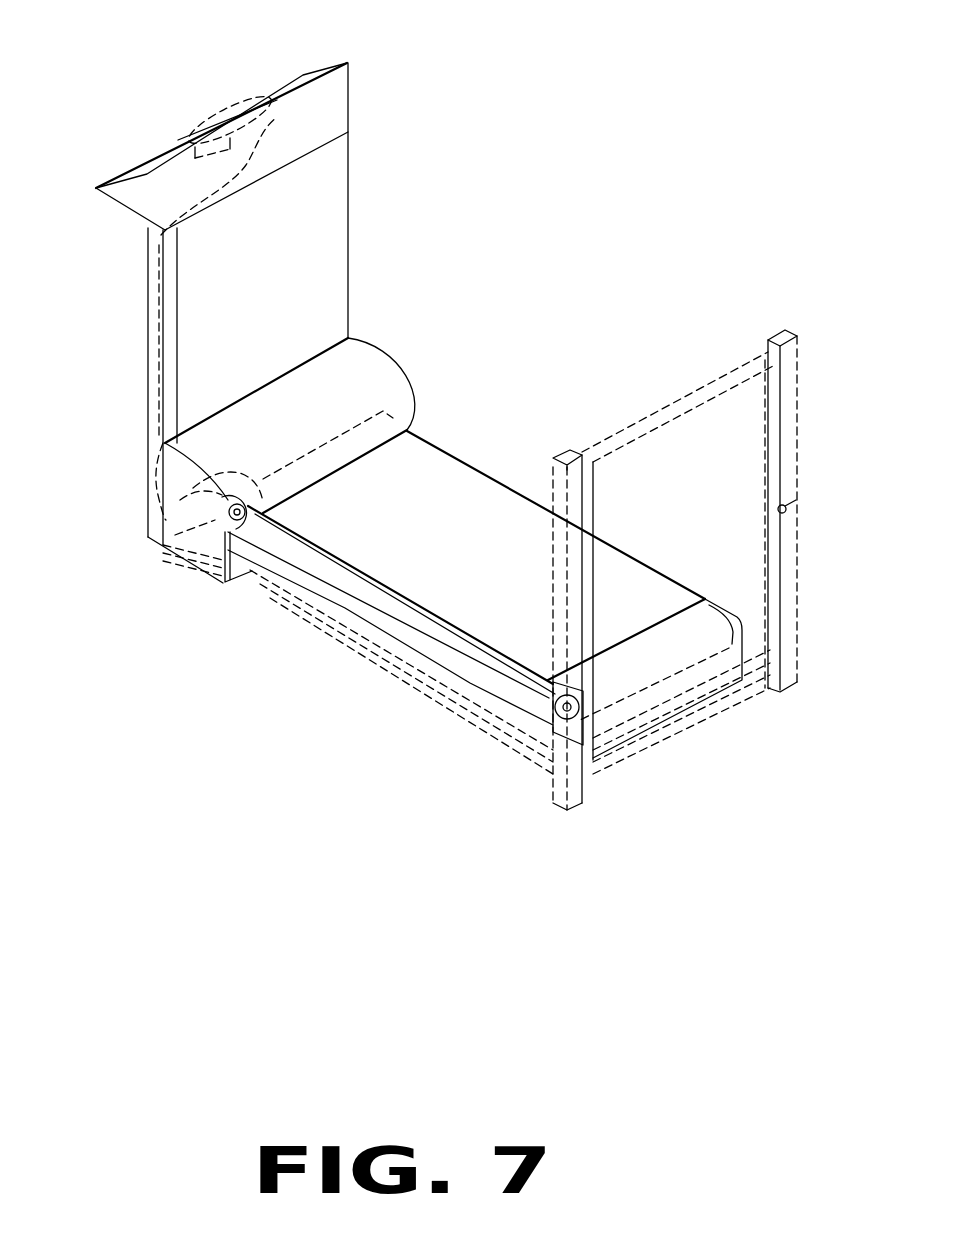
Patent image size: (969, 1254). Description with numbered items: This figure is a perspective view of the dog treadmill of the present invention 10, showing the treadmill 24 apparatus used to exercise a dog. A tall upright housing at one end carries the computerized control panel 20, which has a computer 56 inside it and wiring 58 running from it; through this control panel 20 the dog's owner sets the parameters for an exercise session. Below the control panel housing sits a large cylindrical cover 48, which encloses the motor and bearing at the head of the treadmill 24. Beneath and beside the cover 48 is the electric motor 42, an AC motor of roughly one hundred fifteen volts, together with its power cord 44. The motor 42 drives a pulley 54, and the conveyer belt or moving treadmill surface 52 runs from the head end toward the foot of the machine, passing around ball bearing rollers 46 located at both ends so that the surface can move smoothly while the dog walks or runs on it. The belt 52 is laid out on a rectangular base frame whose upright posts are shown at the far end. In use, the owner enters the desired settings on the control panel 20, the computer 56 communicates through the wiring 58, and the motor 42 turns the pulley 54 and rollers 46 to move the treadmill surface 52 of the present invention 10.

The present invention 10 is at (543, 252).
The computerized control panel 20 is at (242, 107).
The treadmill 24 is at (512, 490).
The motor 42 is at (203, 550).
The power cord 44 is at (163, 532).
The ball bearing roller 46 is at (264, 532).
The cover 48 is at (372, 350).
The conveyer belt 52 is at (382, 583).
The pulley 54 is at (540, 699).
The computer 56 is at (277, 117).
The wiring 58 is at (168, 363).